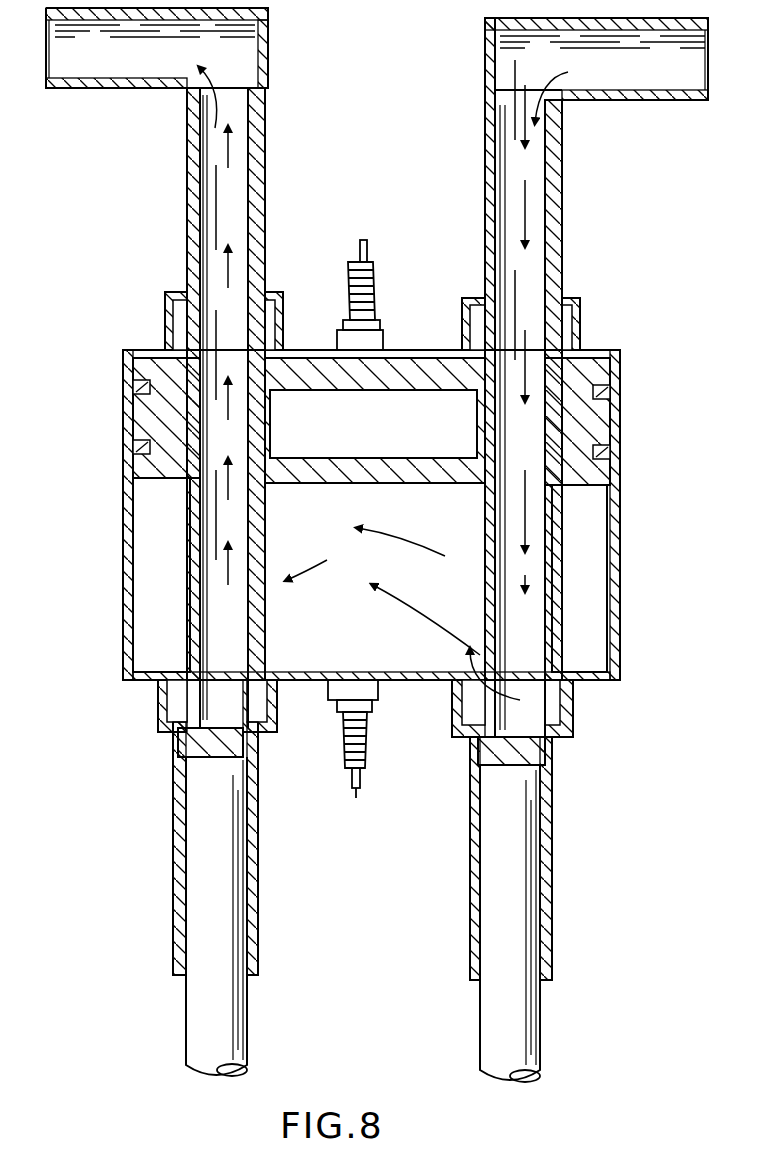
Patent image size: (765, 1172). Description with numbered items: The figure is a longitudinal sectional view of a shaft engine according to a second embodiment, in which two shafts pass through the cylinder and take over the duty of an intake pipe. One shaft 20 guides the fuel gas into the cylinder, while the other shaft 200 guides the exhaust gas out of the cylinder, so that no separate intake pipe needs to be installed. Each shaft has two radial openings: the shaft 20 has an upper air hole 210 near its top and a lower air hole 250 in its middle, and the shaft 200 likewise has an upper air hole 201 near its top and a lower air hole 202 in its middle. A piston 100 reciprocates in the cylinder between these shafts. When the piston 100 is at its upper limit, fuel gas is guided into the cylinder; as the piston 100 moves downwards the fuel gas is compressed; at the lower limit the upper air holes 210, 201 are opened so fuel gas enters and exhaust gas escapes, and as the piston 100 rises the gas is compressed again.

The piston 100 is at (583, 430).
The shaft 200 is at (195, 244).
The upper air hole 201 is at (260, 126).
The lower air hole 202 is at (195, 694).
The shaft 20 is at (523, 275).
The upper air hole 210 is at (555, 133).
The lower air hole 250 is at (540, 705).